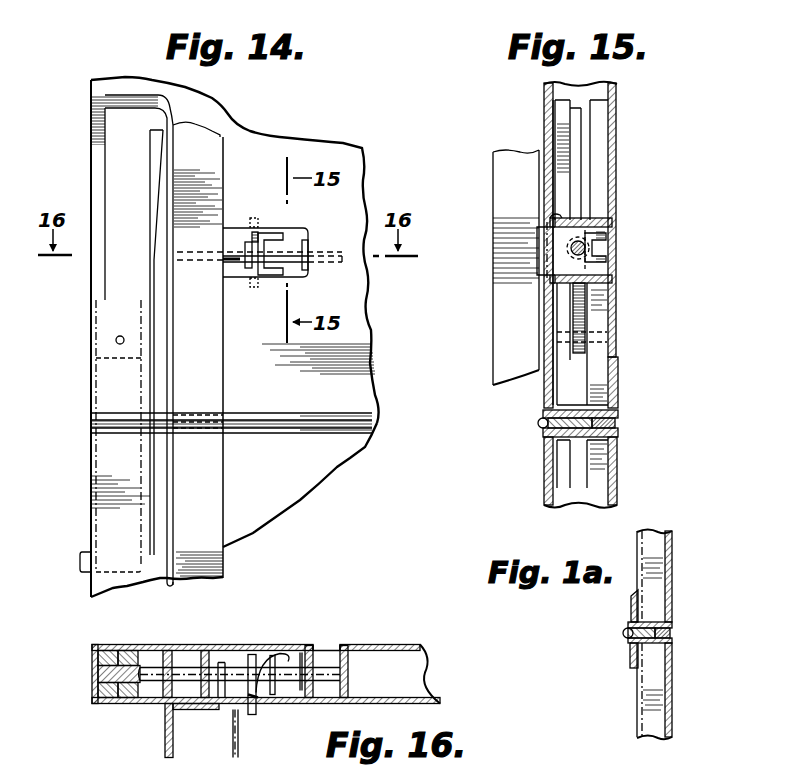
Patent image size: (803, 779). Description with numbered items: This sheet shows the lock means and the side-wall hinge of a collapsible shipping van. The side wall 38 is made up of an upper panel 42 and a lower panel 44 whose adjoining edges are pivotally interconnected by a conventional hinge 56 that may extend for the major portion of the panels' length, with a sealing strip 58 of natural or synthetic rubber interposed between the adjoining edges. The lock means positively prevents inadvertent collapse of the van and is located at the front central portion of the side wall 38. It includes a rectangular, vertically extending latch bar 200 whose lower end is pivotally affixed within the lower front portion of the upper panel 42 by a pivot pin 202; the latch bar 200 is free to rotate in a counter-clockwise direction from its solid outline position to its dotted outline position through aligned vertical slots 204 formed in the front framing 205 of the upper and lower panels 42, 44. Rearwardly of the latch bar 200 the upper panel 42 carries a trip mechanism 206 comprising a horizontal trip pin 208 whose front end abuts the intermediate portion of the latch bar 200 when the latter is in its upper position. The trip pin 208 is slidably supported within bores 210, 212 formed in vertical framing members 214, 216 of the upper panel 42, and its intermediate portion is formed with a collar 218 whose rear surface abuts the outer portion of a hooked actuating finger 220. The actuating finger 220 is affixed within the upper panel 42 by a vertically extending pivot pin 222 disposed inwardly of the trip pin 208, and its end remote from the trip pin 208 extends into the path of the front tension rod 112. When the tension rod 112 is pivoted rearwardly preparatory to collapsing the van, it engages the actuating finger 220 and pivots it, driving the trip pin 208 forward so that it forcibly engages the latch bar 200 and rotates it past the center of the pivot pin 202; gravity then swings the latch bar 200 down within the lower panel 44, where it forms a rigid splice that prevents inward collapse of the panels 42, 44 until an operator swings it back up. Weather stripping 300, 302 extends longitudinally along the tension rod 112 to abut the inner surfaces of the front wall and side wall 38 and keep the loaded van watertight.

In FIG. 1A, the side wall 38 is at (635, 541).
In FIG. 14, the upper panel 42 is at (353, 290).
In FIG. 15, the upper panel 42 is at (615, 138).
In FIG. 1A, the upper panel 42 is at (653, 582).
In FIG. 14, the lower panel 44 is at (326, 463).
In FIG. 15, the lower panel 44 is at (613, 492).
In FIG. 1A, the lower panel 44 is at (657, 697).
In FIG. 14, the hinge 56 is at (116, 409).
In FIG. 15, the hinge 56 is at (626, 404).
In FIG. 1A, the hinge 56 is at (631, 624).
In FIG. 14, the sealing strip 58 is at (363, 420).
In FIG. 15, the sealing strip 58 is at (576, 423).
In FIG. 1A, the sealing strip 58 is at (672, 632).
In FIG. 14, the front tension rod 112 is at (198, 152).
In FIG. 15, the front tension rod 112 is at (513, 152).
In FIG. 16, the front tension rod 112 is at (163, 718).
In FIG. 14, the latch bar 200 is at (118, 168).
In FIG. 15, the latch bar 200 is at (578, 183).
In FIG. 16, the latch bar 200 is at (98, 677).
In FIG. 14, the pivot pin 202 is at (116, 342).
In FIG. 15, the pivot pin 202 is at (607, 335).
In FIG. 15, the vertical slots 204 is at (584, 128).
In FIG. 16, the vertical slots 204 is at (98, 670).
In FIG. 16, the front framing 205 is at (140, 648).
In FIG. 14, the trip mechanism 206 is at (293, 248).
In FIG. 15, the trip mechanism 206 is at (594, 220).
In FIG. 14, the trip pin 208 is at (240, 264).
In FIG. 15, the trip pin 208 is at (586, 250).
In FIG. 16, the trip pin 208 is at (330, 675).
In FIG. 15, the bore 210 is at (567, 220).
In FIG. 16, the bore 210 is at (202, 655).
In FIG. 15, the bore 212 is at (560, 298).
In FIG. 16, the bore 212 is at (330, 647).
In FIG. 16, the vertical framing member 214 is at (243, 660).
In FIG. 16, the vertical framing member 216 is at (310, 668).
In FIG. 16, the collar 218 is at (252, 648).
In FIG. 14, the actuating finger 220 is at (246, 240).
In FIG. 15, the actuating finger 220 is at (537, 247).
In FIG. 16, the actuating finger 220 is at (265, 657).
In FIG. 15, the pivot pin 222 is at (560, 223).
In FIG. 16, the pivot pin 222 is at (257, 697).
In FIG. 16, the weather stripping 300 is at (163, 743).
In FIG. 16, the weather stripping 302 is at (212, 723).